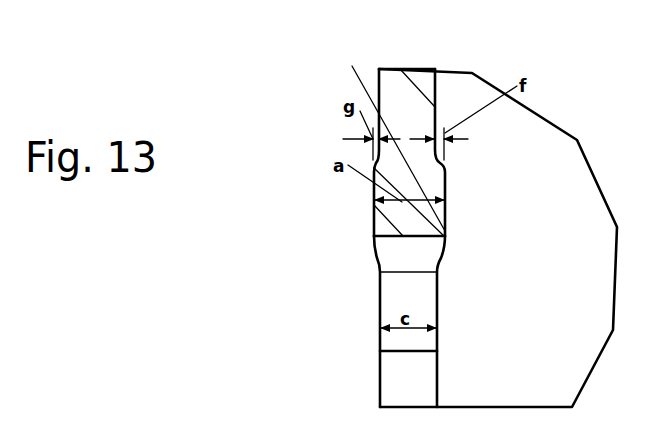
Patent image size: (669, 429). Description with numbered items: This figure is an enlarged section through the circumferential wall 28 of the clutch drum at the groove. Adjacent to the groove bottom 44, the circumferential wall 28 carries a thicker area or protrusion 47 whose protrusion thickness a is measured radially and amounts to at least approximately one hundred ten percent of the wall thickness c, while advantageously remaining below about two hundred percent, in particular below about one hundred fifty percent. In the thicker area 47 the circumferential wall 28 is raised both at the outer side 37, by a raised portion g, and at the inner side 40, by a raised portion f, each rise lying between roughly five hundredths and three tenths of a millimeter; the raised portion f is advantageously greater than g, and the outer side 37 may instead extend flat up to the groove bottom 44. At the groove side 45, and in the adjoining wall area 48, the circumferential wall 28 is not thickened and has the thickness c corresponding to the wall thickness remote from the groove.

The circumferential wall 28 is at (398, 82).
The outer side 37 is at (391, 138).
The inner side 40 is at (437, 95).
The groove bottom 44 is at (403, 235).
The groove side 45 is at (388, 296).
The thicker area (protrusion) 47 is at (402, 220).
The wall area 48 is at (393, 383).